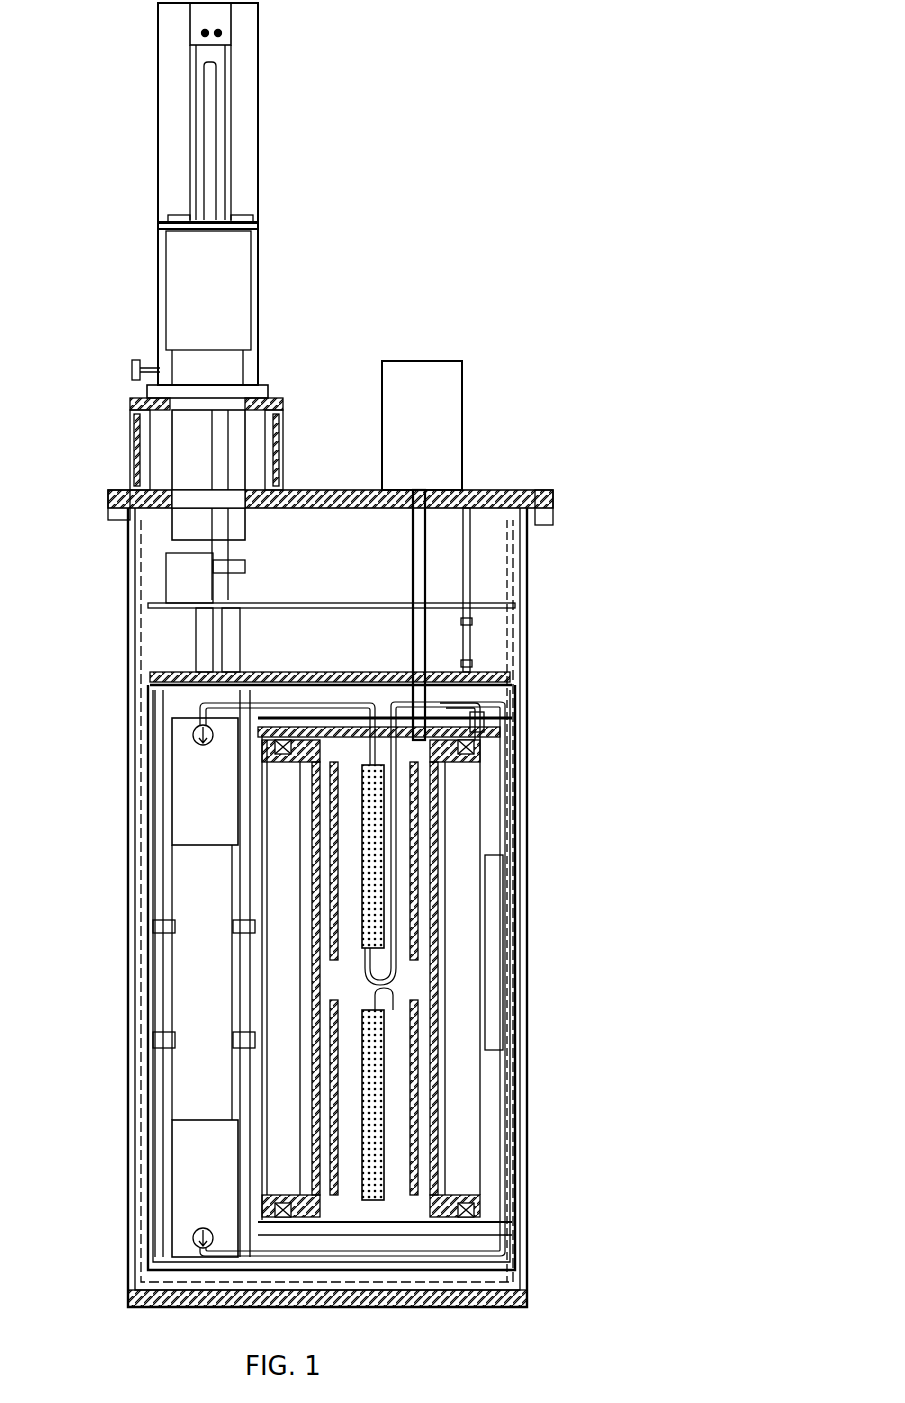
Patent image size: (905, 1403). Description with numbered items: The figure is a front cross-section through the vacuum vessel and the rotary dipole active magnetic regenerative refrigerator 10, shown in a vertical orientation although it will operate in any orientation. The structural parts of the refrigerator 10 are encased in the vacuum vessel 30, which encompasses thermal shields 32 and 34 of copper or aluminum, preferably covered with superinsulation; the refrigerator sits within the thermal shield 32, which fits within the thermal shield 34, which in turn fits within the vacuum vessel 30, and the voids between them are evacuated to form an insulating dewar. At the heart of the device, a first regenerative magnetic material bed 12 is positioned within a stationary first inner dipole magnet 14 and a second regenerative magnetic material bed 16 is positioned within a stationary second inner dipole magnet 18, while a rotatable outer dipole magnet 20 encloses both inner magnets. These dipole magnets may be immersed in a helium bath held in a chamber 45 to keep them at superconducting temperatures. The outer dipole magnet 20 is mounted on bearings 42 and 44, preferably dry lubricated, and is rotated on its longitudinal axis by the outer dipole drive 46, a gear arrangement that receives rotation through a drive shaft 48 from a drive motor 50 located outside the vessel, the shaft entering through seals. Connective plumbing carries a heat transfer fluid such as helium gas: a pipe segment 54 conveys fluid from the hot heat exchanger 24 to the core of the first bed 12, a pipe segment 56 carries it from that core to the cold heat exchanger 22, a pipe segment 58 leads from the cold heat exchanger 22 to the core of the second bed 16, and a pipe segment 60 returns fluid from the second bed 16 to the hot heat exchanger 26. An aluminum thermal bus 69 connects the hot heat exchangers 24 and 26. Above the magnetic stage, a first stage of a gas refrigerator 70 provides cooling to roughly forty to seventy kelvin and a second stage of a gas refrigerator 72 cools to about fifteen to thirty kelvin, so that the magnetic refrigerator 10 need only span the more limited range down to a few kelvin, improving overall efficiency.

The rotary dipole active magnetic regenerative refrigerator 10 is at (533, 1052).
The first regenerative magnetic material bed 12 is at (384, 875).
The first inner dipole magnet 14 is at (438, 848).
The second regenerative magnetic material bed 16 is at (384, 1100).
The second inner dipole magnet 18 is at (418, 1070).
The rotatable outer dipole magnet 20 is at (438, 1008).
The cold heat exchanger 22 is at (494, 966).
The hot heat exchanger 24 is at (205, 781).
The hot heat exchanger 26 is at (205, 1188).
The vacuum vessel 30 is at (130, 1125).
The thermal shield 32 is at (150, 1072).
The thermal shield 34 is at (138, 1002).
The bearing 42 is at (448, 772).
The bearing 44 is at (472, 1210).
The chamber 45 is at (265, 985).
The outer dipole drive 46 is at (425, 738).
The drive shaft 48 is at (420, 566).
The drive motor 50 is at (462, 428).
The pipe segment 54 is at (300, 672).
The pipe segment 56 is at (503, 810).
The pipe segment 58 is at (500, 1185).
The pipe segment 60 is at (255, 1250).
The aluminum thermal bus 69 is at (204, 973).
The first stage of a gas refrigerator 70 is at (168, 572).
The second stage of a gas refrigerator 72 is at (200, 672).